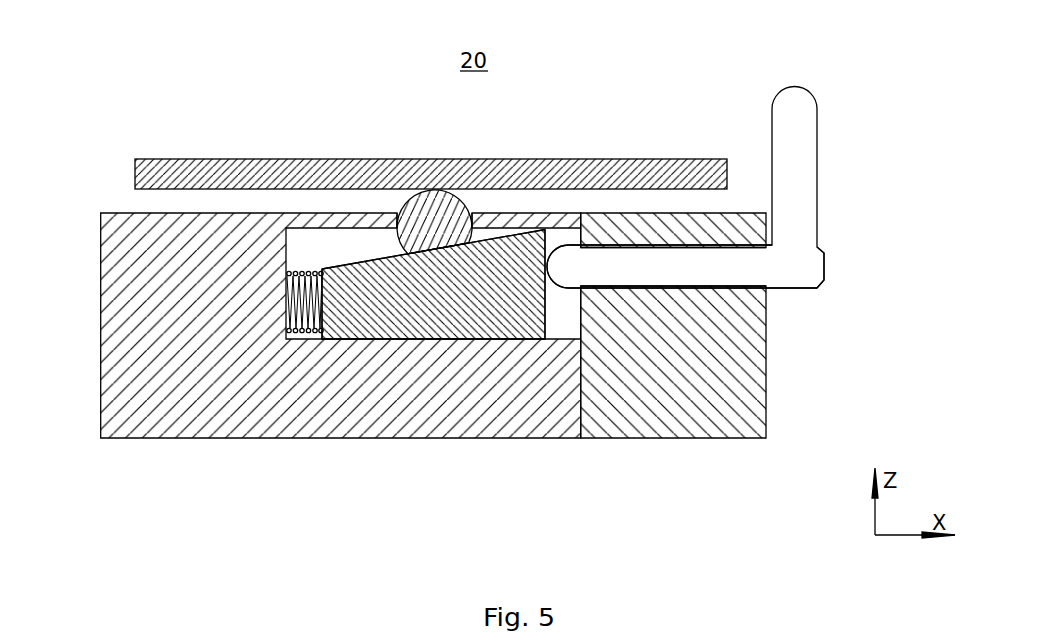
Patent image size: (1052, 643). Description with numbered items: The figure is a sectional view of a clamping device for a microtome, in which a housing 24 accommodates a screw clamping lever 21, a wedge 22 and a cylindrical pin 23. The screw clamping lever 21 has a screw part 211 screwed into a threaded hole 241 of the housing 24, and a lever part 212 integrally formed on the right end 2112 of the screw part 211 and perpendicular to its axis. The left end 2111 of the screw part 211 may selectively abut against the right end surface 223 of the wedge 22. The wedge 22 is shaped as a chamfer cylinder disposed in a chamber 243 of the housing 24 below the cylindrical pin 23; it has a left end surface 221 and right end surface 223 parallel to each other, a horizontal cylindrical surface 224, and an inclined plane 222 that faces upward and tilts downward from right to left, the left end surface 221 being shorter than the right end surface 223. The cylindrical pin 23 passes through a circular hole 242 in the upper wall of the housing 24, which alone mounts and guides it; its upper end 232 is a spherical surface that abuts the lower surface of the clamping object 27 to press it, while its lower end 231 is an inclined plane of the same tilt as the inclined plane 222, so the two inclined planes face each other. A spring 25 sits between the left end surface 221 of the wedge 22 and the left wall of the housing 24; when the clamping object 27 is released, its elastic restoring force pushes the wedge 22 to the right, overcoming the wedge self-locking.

The screw clamping lever 21 is at (724, 255).
The screw part 211 is at (755, 277).
The left end 2111 is at (555, 267).
The right end 2112 is at (811, 278).
The lever part 212 is at (800, 197).
The wedge 22 is at (582, 321).
The left end surface 221 is at (310, 333).
The inclined plane 222 is at (375, 252).
The right end surface 223 is at (547, 305).
The cylindrical surface 224 is at (498, 297).
The cylindrical pin 23 is at (441, 178).
The lower end 231 is at (423, 252).
The upper end 232 is at (427, 193).
The housing 24 is at (215, 333).
The threaded hole 241 is at (766, 290).
The circular hole 242 is at (476, 213).
The chamber 243 is at (568, 306).
The spring 25 is at (302, 297).
The clamping object 27 is at (462, 160).